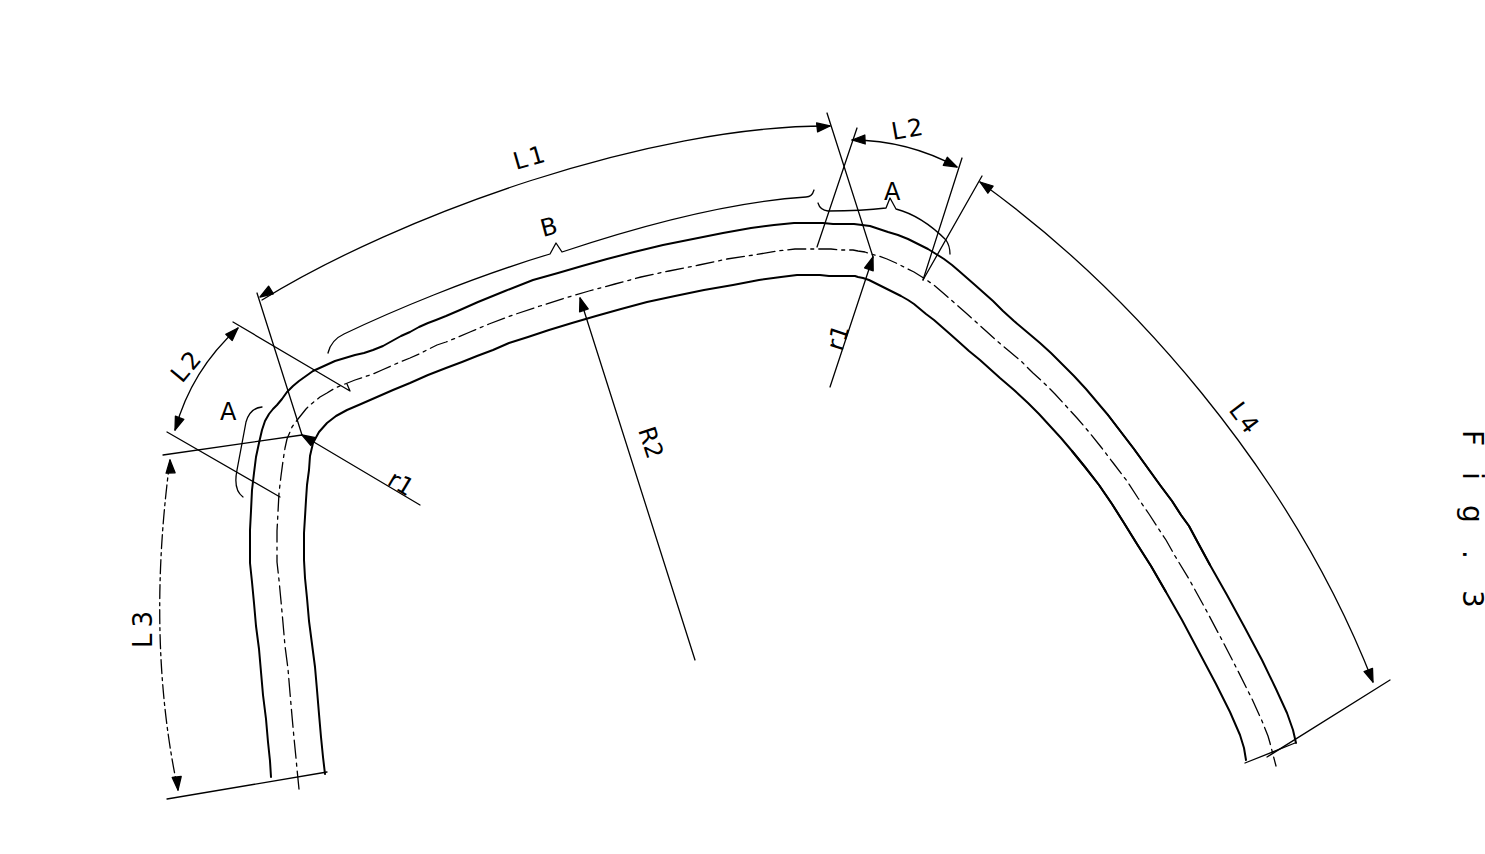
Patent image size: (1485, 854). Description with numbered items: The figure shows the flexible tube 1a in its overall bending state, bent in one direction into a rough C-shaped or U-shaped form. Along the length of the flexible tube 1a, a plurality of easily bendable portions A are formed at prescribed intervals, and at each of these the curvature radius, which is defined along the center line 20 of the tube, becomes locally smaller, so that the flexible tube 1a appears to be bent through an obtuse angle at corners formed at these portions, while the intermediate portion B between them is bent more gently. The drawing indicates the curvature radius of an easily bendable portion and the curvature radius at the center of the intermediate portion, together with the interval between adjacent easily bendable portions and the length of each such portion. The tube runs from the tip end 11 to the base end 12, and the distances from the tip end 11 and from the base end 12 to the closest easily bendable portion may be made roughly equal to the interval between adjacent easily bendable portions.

The flexible tube 1a is at (1113, 258).
The tip end 11 is at (322, 766).
The base end 12 is at (1252, 747).
The center line (axial line) 20 is at (1143, 512).